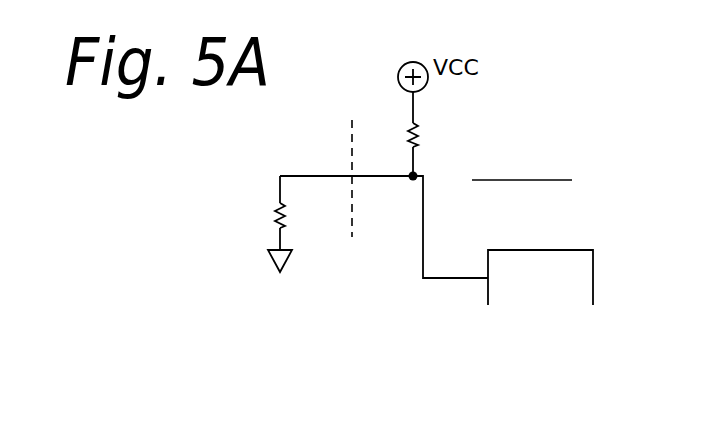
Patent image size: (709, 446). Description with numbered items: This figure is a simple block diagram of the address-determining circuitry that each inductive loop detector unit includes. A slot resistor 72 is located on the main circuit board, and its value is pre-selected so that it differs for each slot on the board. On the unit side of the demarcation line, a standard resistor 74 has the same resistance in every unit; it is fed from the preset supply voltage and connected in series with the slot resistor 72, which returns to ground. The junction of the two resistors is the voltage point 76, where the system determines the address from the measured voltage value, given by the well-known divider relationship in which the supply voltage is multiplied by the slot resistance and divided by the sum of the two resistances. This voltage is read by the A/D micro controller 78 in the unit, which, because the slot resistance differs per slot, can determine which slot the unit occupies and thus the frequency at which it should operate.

The resistor R1 72 is at (242, 202).
The resistor R 74 is at (447, 128).
The voltage point V 76 is at (445, 172).
The A/D micro controller 78 is at (593, 272).